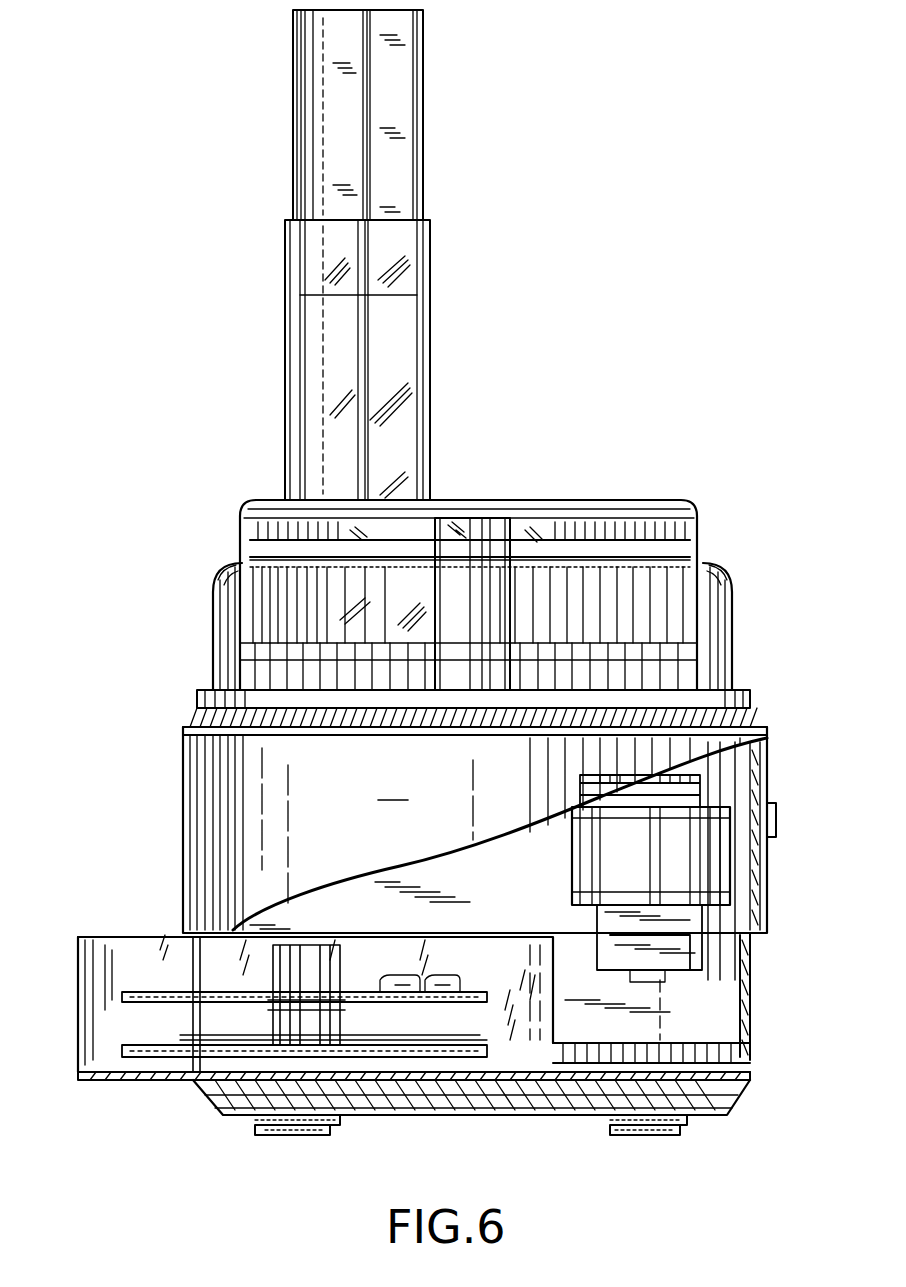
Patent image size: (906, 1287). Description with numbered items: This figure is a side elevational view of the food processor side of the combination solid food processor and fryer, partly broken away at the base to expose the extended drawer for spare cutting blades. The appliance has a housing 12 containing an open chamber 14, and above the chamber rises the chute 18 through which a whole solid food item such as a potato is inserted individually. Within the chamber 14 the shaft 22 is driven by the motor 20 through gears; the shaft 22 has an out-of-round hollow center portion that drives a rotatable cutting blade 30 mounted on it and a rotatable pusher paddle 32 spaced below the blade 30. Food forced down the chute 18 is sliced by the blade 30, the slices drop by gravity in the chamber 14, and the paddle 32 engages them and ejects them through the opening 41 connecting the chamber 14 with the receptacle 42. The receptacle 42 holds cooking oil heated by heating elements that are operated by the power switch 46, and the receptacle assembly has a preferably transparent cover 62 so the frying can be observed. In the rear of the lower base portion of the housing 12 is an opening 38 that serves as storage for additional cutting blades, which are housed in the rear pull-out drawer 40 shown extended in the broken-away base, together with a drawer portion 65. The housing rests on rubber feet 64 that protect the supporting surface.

The housing 12 is at (475, 830).
The open chamber 14 is at (700, 546).
The chute 18 is at (430, 336).
The motor 20 is at (572, 860).
The shaft 22 is at (483, 517).
The rotatable cutting blade 30 is at (372, 574).
The rotatable pusher paddle 32 is at (308, 676).
The opening 38 is at (512, 952).
The rear pull-out drawer 40 is at (76, 962).
The opening 41 is at (406, 622).
The receptacle 42 is at (742, 998).
The power switch 46 is at (777, 838).
The cover 62 is at (733, 592).
The rubber feet 64 is at (320, 1136).
The wall portion 65 is at (135, 957).